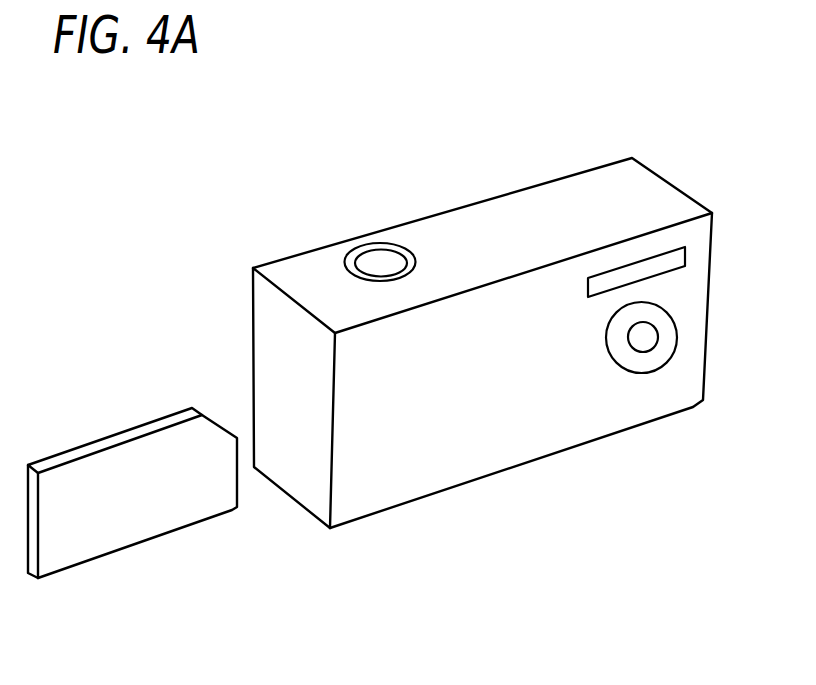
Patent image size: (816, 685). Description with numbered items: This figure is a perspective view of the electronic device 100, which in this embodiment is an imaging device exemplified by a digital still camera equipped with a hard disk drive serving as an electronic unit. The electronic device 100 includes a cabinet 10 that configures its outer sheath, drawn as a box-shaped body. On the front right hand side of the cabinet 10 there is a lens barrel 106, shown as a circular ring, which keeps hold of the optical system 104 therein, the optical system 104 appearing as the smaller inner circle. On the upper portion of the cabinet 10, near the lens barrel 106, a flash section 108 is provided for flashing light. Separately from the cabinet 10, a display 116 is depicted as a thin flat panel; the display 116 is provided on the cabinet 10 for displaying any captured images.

The cabinet 10 is at (482, 309).
The electronic device 100 is at (311, 195).
The optical system 104 is at (648, 334).
The lens barrel 106 is at (628, 357).
The flash section 108 is at (385, 246).
The display 116 is at (127, 430).